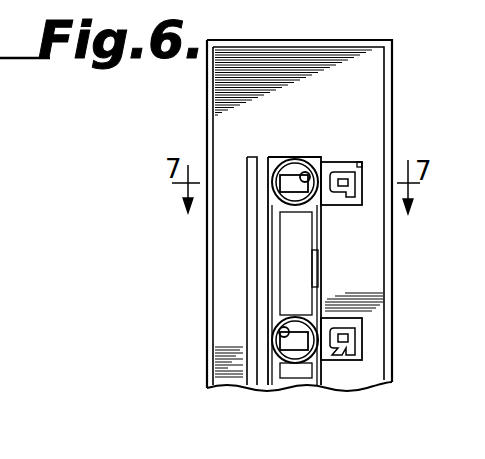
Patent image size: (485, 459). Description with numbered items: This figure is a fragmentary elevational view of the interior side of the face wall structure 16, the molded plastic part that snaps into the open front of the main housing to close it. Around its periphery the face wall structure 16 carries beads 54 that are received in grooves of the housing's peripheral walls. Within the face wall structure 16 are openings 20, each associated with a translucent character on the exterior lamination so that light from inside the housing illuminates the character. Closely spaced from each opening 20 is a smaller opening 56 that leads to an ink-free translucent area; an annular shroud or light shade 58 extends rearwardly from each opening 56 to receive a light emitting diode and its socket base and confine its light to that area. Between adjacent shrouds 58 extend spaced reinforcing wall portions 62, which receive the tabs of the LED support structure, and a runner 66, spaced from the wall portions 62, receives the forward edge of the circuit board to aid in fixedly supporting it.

The face wall structure 16 is at (393, 77).
The opening 20 is at (360, 168).
The bead 54 is at (323, 46).
The opening 56 is at (323, 135).
The annular shroud or light shade 58 is at (278, 196).
The reinforcing wall portion 62 is at (277, 248).
The runner 66 is at (250, 282).